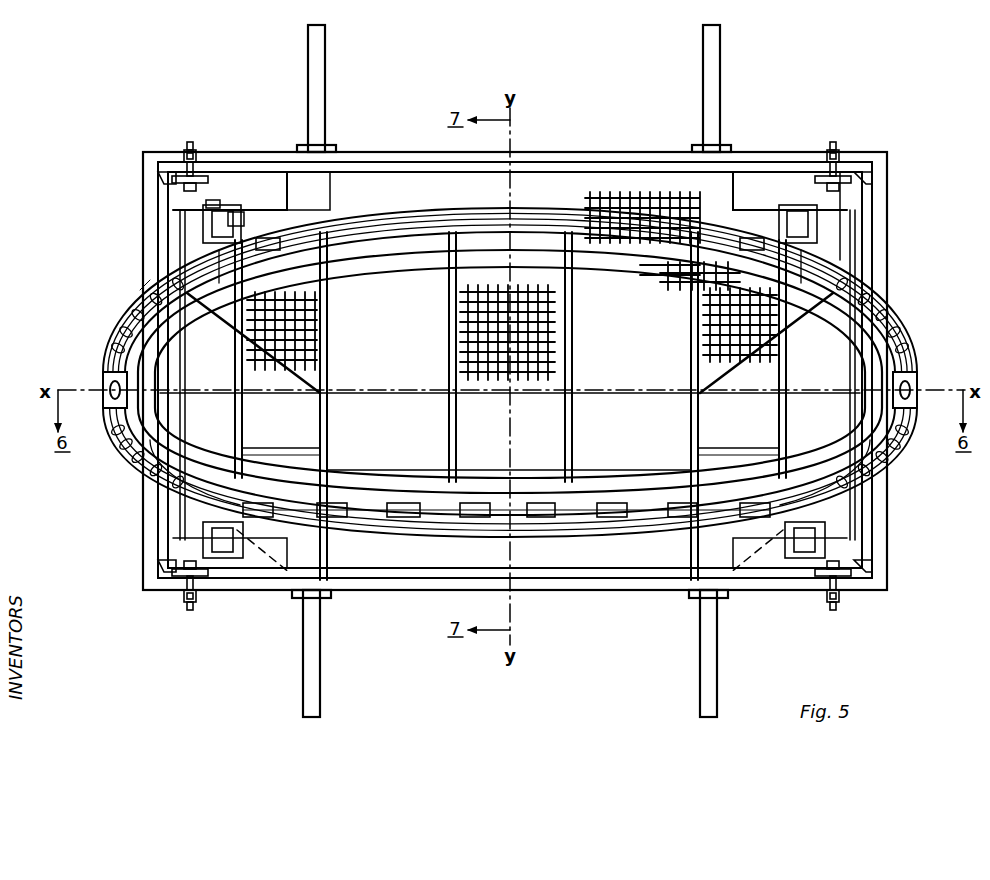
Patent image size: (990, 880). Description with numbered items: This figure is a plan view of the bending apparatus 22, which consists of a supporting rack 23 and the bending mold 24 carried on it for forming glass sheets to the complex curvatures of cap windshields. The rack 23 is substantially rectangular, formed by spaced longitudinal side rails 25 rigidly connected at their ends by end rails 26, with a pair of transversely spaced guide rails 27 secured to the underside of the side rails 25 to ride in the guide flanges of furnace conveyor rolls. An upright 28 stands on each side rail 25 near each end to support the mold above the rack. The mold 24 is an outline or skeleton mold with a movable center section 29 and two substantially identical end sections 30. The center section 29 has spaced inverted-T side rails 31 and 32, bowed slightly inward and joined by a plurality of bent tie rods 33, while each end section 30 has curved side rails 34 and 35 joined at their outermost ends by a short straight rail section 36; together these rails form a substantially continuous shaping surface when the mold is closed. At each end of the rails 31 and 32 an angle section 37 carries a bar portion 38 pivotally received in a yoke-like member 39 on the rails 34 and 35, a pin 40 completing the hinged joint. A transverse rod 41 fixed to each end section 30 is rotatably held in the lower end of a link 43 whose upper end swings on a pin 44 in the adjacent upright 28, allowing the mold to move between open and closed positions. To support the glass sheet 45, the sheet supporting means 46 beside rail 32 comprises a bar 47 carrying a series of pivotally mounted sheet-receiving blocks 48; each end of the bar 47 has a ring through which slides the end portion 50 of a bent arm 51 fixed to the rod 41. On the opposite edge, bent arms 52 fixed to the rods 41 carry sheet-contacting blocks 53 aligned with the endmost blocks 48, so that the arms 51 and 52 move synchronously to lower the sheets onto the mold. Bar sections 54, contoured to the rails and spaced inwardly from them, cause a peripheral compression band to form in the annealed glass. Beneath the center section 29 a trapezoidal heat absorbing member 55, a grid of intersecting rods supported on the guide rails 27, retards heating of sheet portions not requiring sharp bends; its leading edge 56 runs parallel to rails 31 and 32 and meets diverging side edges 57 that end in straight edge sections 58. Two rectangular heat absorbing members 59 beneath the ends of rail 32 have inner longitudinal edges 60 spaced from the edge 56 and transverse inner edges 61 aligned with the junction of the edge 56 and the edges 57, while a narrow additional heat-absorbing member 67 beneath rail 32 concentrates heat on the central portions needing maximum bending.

The bending apparatus 22 is at (128, 243).
The supporting rack 23 is at (157, 263).
The bending mold 24 is at (137, 289).
The side rails 25 is at (385, 152).
The end rails 26 is at (160, 197).
The guide rails 27 is at (325, 107).
The upright 28 is at (198, 154).
The center section 29 is at (376, 222).
The end sections 30 is at (125, 313).
The side rail 31 is at (440, 216).
The side rail 32 is at (372, 530).
The tie rods 33 is at (455, 434).
The side rail 34 is at (120, 329).
The side rail 35 is at (130, 450).
The rail section 36 is at (104, 378).
The angle section 37 is at (288, 190).
The bar portion 38 is at (238, 214).
The yoke-like member 39 is at (214, 200).
The pin 40 is at (226, 206).
The transverse rod 41 is at (858, 220).
The link 43 is at (172, 172).
The pin 44 is at (191, 142).
The glass sheet 45 is at (340, 212).
The sheet supporting means 46 is at (366, 504).
The bar 47 is at (395, 508).
The sheet-receiving blocks 48 is at (540, 508).
The end portion 50 is at (270, 502).
The bent arm 51 is at (200, 492).
The bent arms 52 is at (218, 284).
The sheet-contacting blocks 53 is at (280, 248).
The bar sections 54 is at (195, 292).
The heat absorbing member 55 is at (642, 374).
The leading edge 56 is at (395, 394).
The side edges 57 is at (288, 372).
The edge sections 58 is at (180, 226).
The heat absorbing members 59 is at (272, 462).
The inner longitudinal edges 60 is at (252, 448).
The transverse inner edges 61 is at (327, 554).
The heat-absorbing member 67 is at (520, 468).